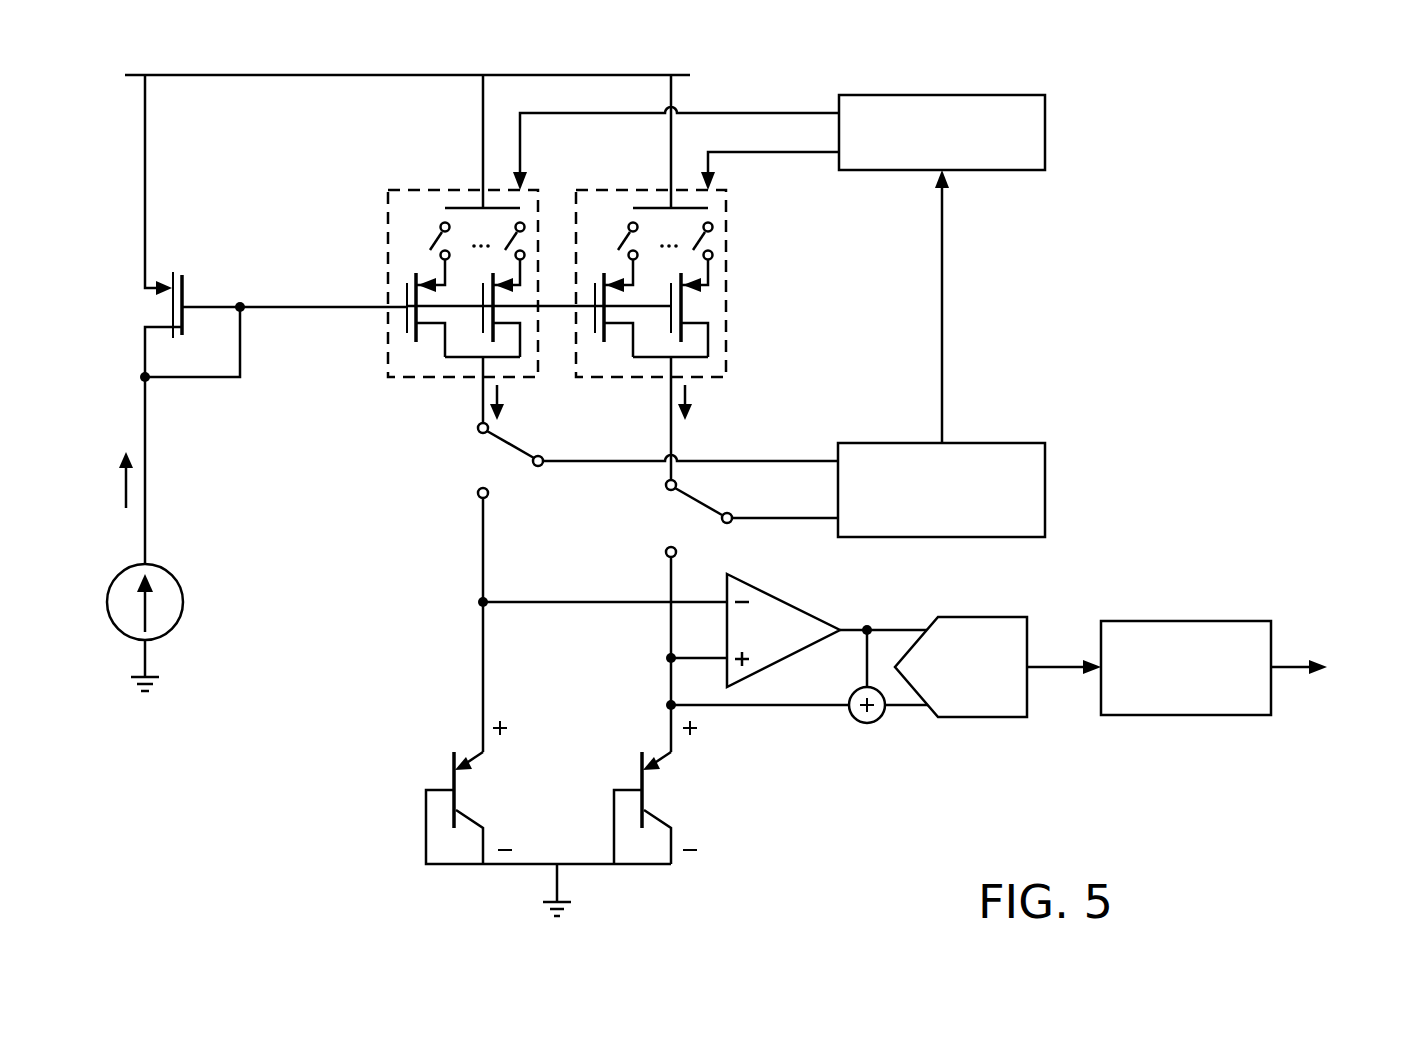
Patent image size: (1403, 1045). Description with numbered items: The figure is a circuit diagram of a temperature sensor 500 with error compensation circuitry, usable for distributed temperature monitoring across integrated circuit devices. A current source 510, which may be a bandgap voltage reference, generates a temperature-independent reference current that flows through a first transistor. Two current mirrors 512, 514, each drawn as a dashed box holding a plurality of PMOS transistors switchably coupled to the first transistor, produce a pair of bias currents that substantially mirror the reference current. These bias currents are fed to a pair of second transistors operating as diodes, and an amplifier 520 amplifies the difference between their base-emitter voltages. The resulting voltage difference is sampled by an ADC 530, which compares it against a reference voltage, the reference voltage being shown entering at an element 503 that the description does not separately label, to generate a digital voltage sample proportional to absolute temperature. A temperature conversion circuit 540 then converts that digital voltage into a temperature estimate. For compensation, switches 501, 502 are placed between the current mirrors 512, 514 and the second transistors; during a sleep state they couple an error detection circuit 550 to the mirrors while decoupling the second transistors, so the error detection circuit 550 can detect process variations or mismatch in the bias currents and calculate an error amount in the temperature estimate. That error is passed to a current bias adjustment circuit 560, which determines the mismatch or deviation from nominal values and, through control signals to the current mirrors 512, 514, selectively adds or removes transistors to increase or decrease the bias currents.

The temperature sensor 500 is at (1300, 116).
The switch 501 is at (503, 443).
The switch 502 is at (691, 500).
The summing node / adder 503 is at (856, 720).
The current source 510 is at (172, 573).
The current mirror 512 is at (446, 188).
The current mirror 514 is at (634, 188).
The amplifier 520 is at (757, 641).
The ADC 530 is at (955, 695).
The temperature conversion circuit 540 is at (1166, 695).
The error detection circuit 550 is at (922, 517).
The current bias adjustment circuit 560 is at (942, 132).